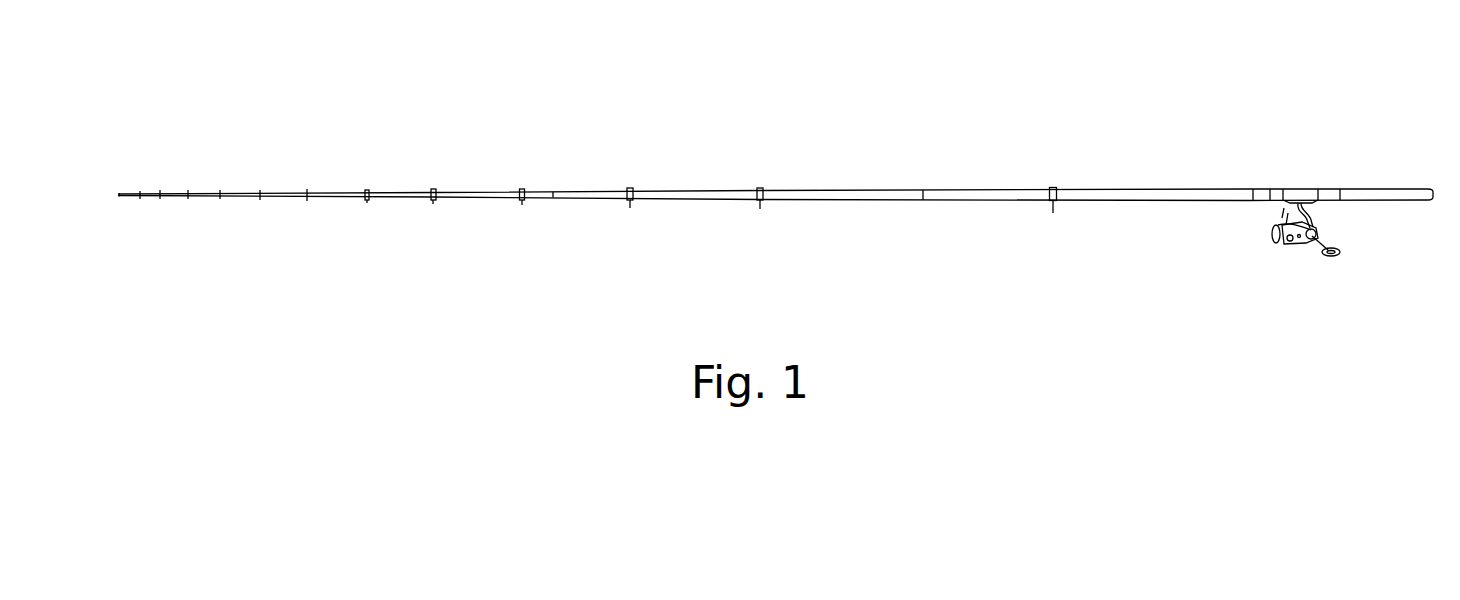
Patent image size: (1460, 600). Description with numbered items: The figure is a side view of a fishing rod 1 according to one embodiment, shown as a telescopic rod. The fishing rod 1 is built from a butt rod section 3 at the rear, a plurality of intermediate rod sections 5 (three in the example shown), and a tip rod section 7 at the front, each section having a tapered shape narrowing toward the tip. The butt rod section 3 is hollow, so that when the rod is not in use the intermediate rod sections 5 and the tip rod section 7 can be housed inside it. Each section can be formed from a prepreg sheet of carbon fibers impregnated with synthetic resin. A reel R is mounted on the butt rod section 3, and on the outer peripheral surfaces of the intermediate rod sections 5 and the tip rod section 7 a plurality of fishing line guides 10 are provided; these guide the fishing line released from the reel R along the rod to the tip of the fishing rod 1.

The fishing rod 1 is at (898, 92).
The butt rod section 3 is at (1208, 187).
The intermediate rod sections 5 is at (400, 200).
The tip rod section 7 is at (140, 191).
The fishing line guide 10 is at (188, 192).
The reel R is at (1292, 248).